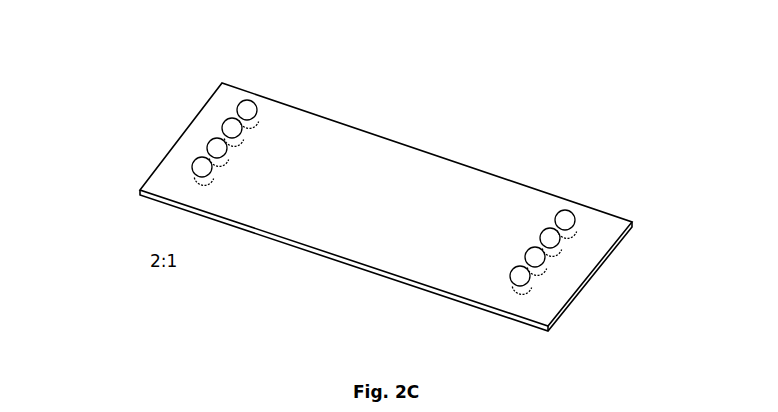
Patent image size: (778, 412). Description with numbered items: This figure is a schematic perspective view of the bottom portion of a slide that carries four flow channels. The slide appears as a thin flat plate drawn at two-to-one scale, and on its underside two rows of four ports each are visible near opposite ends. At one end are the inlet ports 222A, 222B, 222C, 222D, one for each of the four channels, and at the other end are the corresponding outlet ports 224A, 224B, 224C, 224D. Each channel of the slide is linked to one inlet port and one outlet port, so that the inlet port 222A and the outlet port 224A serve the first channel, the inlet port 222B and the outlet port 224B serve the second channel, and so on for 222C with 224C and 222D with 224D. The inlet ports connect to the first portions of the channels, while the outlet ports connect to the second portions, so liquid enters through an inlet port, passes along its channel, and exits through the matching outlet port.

The inlet port 222A is at (192, 167).
The inlet port 222B is at (208, 148).
The inlet port 222C is at (228, 128).
The inlet port 222D is at (245, 110).
The outlet port 224A is at (517, 273).
The outlet port 224B is at (547, 260).
The outlet port 224C is at (552, 240).
The outlet port 224D is at (573, 218).